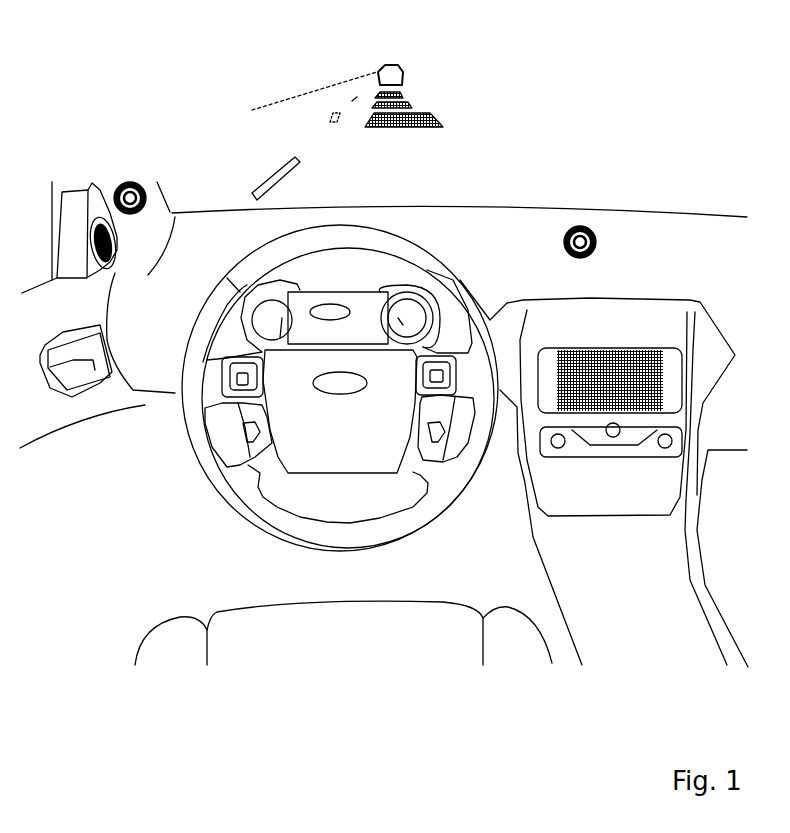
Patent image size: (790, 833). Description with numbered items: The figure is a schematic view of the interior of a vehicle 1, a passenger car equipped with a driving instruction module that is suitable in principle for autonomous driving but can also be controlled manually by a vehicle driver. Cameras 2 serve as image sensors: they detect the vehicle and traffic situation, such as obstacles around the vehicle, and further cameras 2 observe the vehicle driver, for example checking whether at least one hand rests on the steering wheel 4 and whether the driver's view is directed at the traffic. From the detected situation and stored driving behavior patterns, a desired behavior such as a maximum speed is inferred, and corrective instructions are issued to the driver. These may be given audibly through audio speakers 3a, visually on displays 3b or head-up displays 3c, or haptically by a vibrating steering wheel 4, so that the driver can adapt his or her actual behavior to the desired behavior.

The vehicle 1 is at (60, 531).
The cameras 2 is at (145, 182).
The audio speakers 3a is at (115, 262).
The displays 3b is at (605, 342).
The head-up displays 3c is at (410, 65).
The steering wheel 4 is at (433, 285).